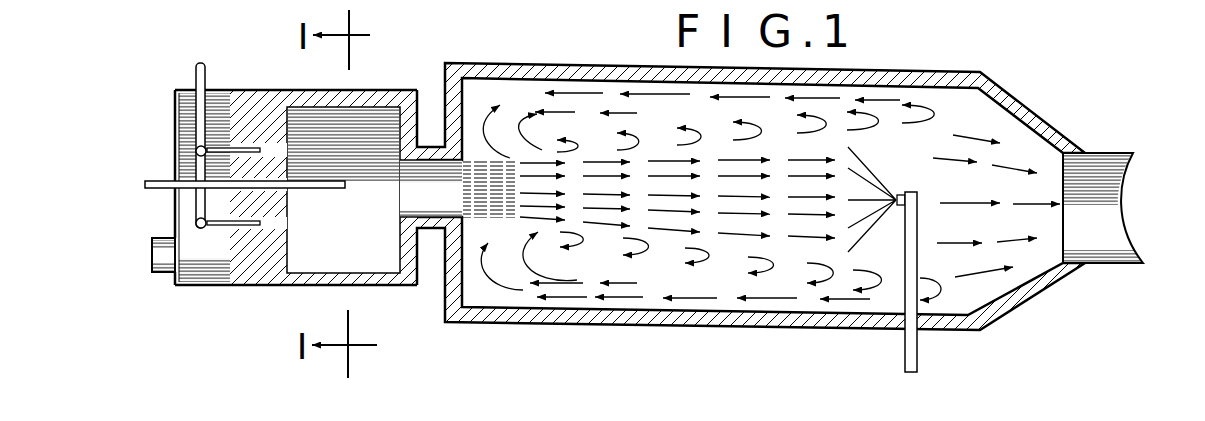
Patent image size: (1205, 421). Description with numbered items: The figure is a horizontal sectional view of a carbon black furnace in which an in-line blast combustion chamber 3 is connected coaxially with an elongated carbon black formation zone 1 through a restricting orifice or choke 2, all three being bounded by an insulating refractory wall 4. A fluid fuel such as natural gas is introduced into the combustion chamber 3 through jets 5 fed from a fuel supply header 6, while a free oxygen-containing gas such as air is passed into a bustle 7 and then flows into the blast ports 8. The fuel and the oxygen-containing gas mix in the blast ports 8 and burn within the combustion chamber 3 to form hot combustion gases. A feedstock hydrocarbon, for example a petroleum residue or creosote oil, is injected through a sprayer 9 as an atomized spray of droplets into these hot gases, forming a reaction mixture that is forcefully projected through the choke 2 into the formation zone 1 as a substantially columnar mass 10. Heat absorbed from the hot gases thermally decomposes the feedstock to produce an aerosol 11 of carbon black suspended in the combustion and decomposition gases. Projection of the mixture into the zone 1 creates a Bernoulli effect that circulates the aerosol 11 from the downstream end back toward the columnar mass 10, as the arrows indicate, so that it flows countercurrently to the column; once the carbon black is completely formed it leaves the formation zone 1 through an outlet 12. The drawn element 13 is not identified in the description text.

The carbon black formation zone 1 is at (943, 287).
The restricting orifice or choke 2 is at (431, 188).
The combustion chamber 3 is at (343, 190).
The insulating refractory wall 4 is at (378, 275).
The jets 5 is at (287, 150).
The fuel supply header 6 is at (206, 70).
The bustle 7 is at (190, 260).
The blast ports 8 is at (283, 223).
The sprayer 9 is at (160, 182).
The columnar mass 10 is at (478, 220).
The aerosol 11 is at (770, 196).
The outlet 12 is at (1113, 242).
The water spray tube 13 is at (904, 345).